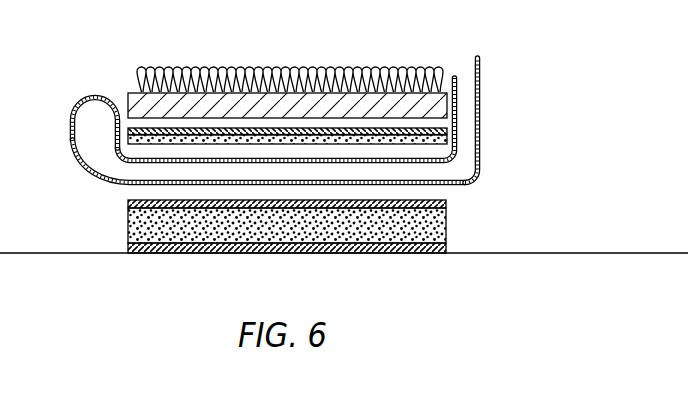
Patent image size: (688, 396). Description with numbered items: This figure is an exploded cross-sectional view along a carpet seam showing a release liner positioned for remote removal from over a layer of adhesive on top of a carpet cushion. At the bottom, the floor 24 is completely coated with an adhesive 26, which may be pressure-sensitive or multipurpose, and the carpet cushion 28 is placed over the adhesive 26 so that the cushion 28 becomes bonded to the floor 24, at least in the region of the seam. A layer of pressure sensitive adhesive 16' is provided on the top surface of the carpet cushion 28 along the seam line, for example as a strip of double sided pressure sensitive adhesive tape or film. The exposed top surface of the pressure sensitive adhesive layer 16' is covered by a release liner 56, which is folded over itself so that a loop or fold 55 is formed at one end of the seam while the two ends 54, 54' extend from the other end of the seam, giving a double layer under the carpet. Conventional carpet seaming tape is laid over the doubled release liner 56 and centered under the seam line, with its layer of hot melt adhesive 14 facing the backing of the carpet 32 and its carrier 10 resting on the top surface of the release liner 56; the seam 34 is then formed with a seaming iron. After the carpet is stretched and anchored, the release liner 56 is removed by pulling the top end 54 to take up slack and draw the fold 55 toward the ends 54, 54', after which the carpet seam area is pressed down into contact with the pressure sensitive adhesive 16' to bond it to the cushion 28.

The carrier 10 is at (332, 140).
The layer of hot melt adhesive 14 is at (288, 133).
The pressure sensitive adhesive layer 16' is at (318, 191).
The floor 24 is at (463, 299).
The adhesive 26 is at (447, 248).
The carpet cushion 28 is at (447, 225).
The carpet 32 is at (203, 66).
The seam 34 is at (432, 111).
The top end of release liner 54 is at (286, 91).
The end of release liner 54' is at (486, 92).
The fold 55 is at (92, 94).
The release liner 56 is at (85, 166).